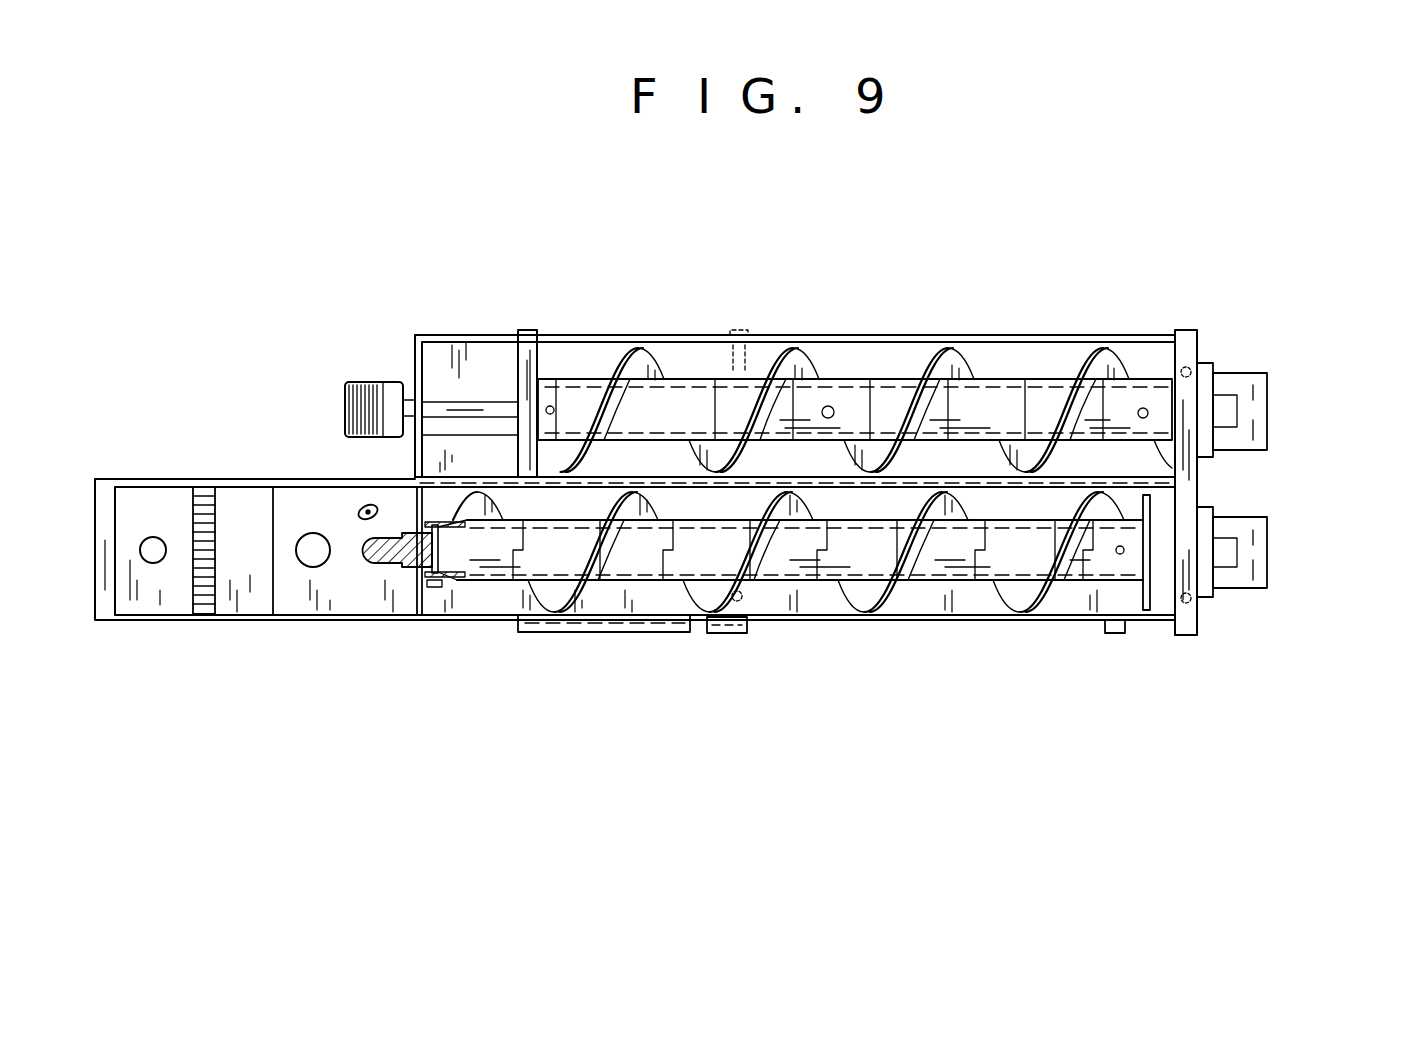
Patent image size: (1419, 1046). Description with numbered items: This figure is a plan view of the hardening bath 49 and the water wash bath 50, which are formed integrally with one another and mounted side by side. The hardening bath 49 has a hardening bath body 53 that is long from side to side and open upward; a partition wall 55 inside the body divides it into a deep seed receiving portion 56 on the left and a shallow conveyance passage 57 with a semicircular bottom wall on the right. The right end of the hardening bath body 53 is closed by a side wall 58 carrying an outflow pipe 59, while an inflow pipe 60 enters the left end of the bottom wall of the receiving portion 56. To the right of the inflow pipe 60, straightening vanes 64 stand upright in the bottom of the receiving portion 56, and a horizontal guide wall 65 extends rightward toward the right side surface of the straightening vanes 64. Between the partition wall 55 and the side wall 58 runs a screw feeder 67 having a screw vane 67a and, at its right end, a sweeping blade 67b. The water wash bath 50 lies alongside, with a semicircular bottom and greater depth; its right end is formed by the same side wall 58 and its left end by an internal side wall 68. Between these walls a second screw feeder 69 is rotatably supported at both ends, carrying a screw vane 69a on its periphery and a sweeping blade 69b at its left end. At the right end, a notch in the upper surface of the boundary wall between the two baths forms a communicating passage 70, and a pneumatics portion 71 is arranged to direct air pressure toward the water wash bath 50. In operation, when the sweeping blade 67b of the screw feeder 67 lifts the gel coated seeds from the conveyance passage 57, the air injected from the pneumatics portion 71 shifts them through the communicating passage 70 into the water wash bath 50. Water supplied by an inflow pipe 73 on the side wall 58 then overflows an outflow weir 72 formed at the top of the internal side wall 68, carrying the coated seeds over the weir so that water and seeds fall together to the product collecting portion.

The hardening bath 49 is at (474, 642).
The water wash bath 50 is at (463, 298).
The hardening bath body 53 is at (982, 620).
The partition wall 55 is at (415, 592).
The seed receiving portion 56 is at (313, 497).
The conveyance passage 57 is at (646, 598).
The side wall 58 is at (1188, 617).
The outflow pipe 59 is at (1228, 560).
The inflow pipe 60 is at (157, 537).
The straightening vanes 64 is at (205, 610).
The horizontal guide wall 65 is at (242, 596).
The screw feeder 67 is at (932, 524).
The screw vane 67a is at (1160, 547).
The sweeping blade 67b is at (1135, 506).
The internal side wall 68 is at (527, 353).
The screw feeder 69 is at (855, 346).
The screw vane 69a is at (603, 278).
The sweeping blade 69b is at (557, 458).
The communicating passage 70 is at (1119, 478).
The pneumatics portion 71 is at (1115, 634).
The outflow weir 72 is at (497, 440).
The inflow pipe 73 is at (1228, 400).